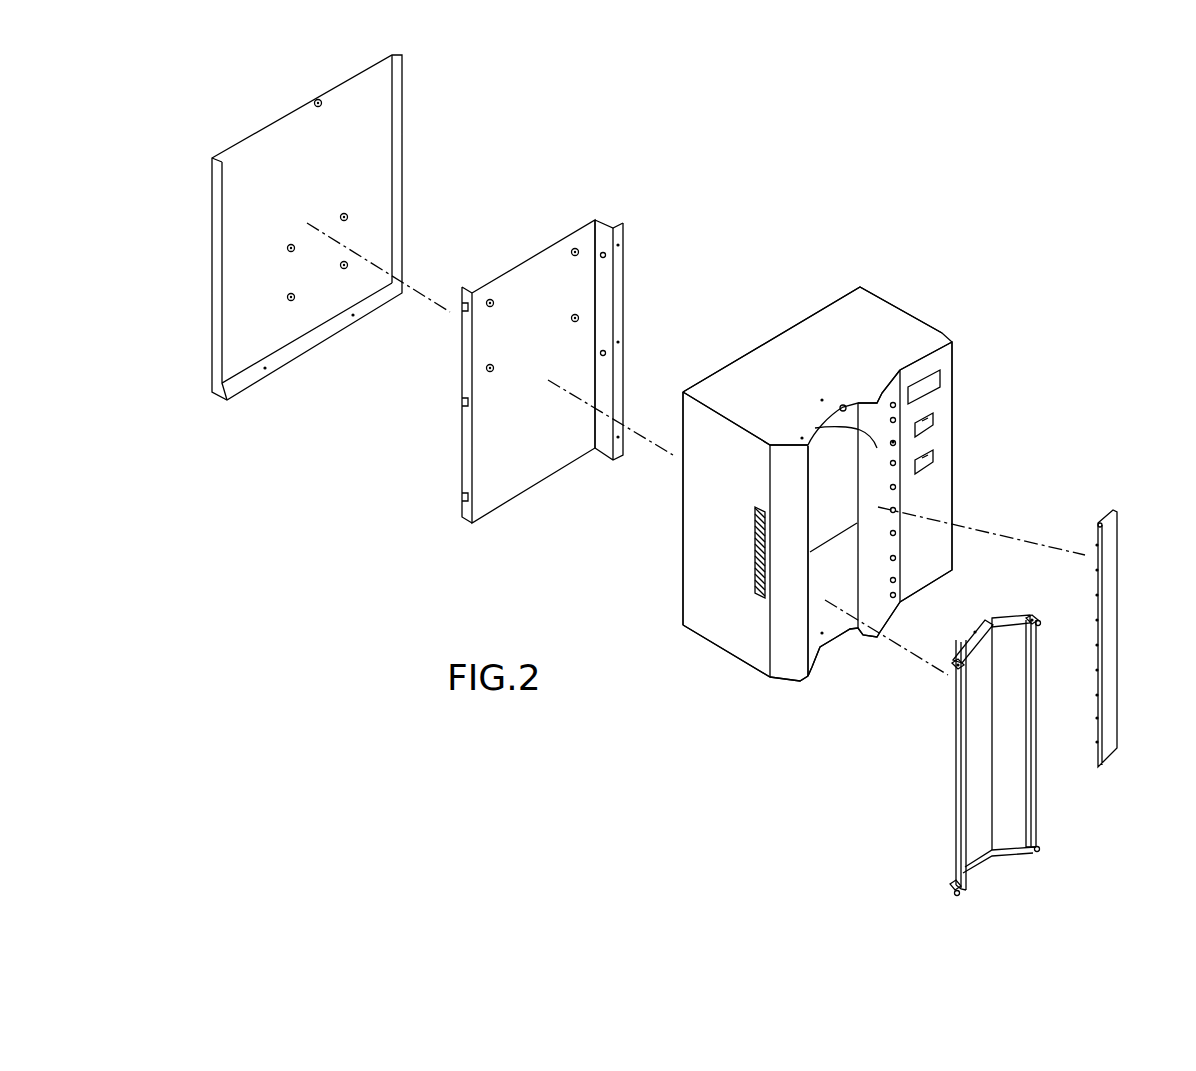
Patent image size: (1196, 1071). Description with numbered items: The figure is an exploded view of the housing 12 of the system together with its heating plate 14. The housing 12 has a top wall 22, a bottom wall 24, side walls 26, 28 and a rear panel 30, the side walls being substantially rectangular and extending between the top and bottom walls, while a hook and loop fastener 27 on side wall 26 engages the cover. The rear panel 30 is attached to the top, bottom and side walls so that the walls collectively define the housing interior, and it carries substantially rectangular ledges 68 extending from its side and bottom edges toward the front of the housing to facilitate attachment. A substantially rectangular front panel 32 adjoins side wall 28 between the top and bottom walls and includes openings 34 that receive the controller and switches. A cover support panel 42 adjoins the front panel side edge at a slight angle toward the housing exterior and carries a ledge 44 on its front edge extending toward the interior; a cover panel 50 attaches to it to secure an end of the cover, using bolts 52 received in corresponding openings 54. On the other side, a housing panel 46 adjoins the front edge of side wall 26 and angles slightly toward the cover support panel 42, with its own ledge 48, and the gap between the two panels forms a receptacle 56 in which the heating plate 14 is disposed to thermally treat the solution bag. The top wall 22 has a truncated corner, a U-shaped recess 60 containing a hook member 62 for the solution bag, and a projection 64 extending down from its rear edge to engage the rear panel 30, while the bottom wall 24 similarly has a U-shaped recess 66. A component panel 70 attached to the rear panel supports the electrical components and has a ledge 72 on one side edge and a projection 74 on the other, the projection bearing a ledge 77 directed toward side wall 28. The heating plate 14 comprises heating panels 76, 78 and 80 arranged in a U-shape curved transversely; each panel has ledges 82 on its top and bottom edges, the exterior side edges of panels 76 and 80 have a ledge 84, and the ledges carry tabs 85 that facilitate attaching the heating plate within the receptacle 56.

The housing 12 is at (818, 186).
The heating plate 14 is at (1050, 785).
The top wall 22 is at (788, 337).
The bottom wall 24 is at (835, 623).
The side wall 26 is at (693, 528).
The hook and loop fastener 27 is at (755, 563).
The side wall 28 is at (913, 310).
The rear panel 30 is at (373, 75).
The front panel 32 is at (943, 502).
The openings 34 is at (923, 374).
The cover support panel 42 is at (883, 413).
The ledge 44 is at (860, 493).
The housing panel 46 is at (782, 625).
The ledge 48 is at (807, 572).
The cover panel 50 is at (1113, 645).
The bolts 52 is at (1098, 523).
The openings 54 is at (893, 442).
The receptacle 56 is at (818, 440).
The recess 60 is at (875, 500).
The hook member 62 is at (852, 403).
The projection 64 is at (680, 403).
The recess 66 is at (830, 647).
The ledges 68 is at (397, 93).
The component panel 70 is at (518, 280).
The ledge 72 is at (463, 443).
The projection 74 is at (597, 229).
The heating panel 76 is at (948, 647).
The ledge 77 is at (627, 310).
The heating panel 78 is at (977, 650).
The heating panel 80 is at (1005, 708).
The ledges 82 is at (958, 653).
The ledge 84 is at (1035, 768).
The tabs 85 is at (1038, 625).